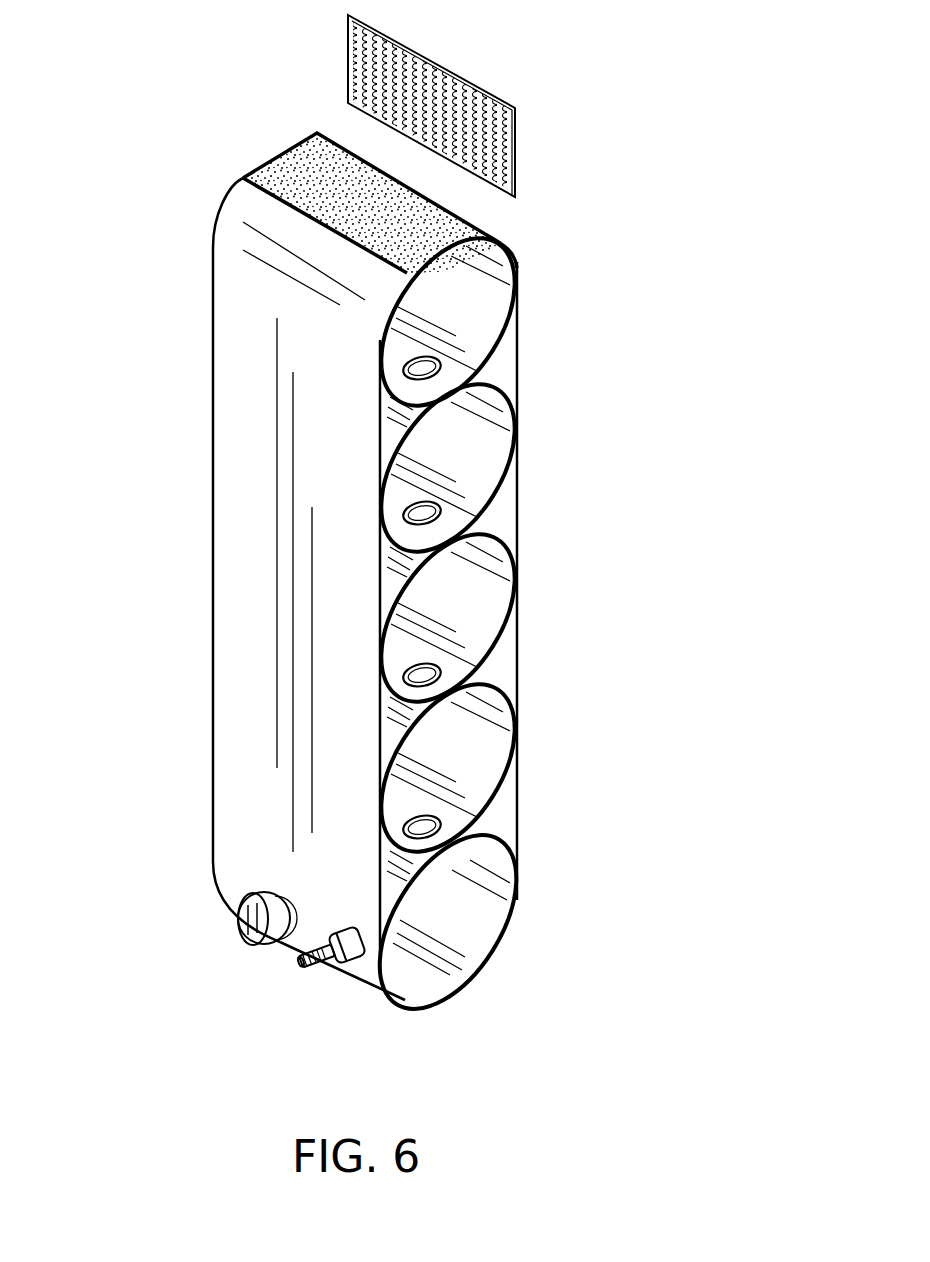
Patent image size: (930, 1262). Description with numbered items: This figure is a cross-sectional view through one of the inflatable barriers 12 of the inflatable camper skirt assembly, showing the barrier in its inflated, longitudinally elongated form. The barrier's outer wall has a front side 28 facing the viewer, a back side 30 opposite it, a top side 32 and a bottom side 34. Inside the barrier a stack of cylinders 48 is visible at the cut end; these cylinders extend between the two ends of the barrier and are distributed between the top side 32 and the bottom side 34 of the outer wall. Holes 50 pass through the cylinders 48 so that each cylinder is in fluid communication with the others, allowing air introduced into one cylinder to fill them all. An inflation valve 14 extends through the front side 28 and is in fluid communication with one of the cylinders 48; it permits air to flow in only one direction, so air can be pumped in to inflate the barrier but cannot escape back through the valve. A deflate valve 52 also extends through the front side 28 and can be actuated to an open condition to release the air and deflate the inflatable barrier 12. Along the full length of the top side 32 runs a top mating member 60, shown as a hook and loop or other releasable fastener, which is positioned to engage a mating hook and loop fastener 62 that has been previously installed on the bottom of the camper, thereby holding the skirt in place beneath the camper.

The inflatable barrier 12 is at (242, 752).
The inflation valve 14 is at (333, 967).
The front side 28 is at (255, 527).
The back side 30 is at (517, 486).
The top side 32 is at (237, 228).
The bottom side 34 is at (363, 982).
The cylinder 48 is at (497, 393).
The hole 50 is at (432, 357).
The deflate valve 52 is at (246, 932).
The top mating member 60 is at (315, 175).
The hook and loop fastener 62 is at (508, 152).